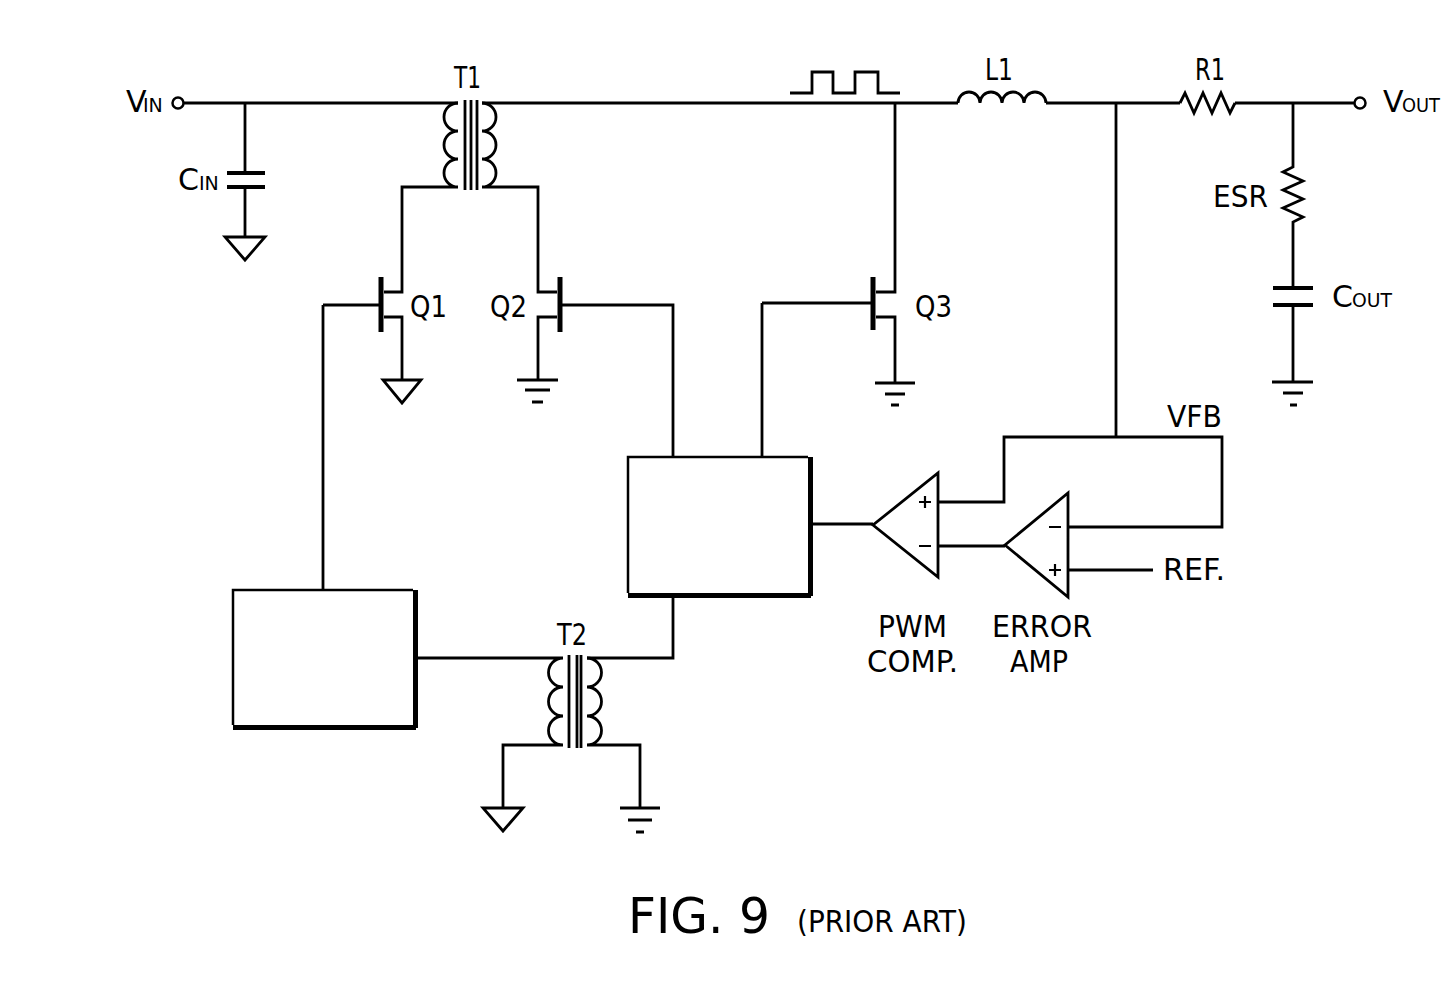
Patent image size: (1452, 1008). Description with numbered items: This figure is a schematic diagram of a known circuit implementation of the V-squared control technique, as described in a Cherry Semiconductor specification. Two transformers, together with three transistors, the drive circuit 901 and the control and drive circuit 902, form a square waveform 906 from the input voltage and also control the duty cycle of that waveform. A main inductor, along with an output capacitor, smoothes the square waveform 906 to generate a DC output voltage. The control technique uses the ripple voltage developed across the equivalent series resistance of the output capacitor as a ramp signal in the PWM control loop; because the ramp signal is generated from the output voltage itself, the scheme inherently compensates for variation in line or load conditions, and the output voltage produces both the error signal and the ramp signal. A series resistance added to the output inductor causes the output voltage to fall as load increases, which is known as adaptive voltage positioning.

The drive circuit 901 is at (270, 728).
The control and drive circuit 902 is at (788, 456).
The square waveform 906 is at (866, 75).